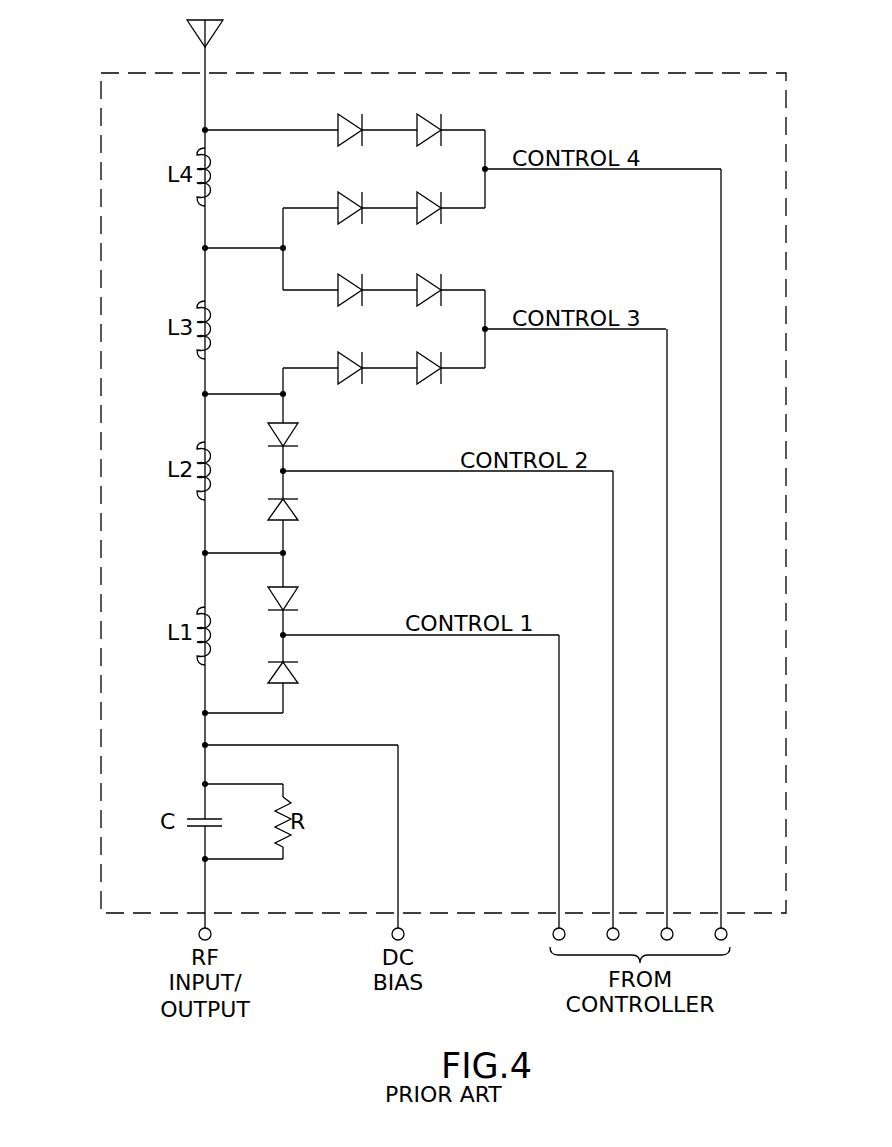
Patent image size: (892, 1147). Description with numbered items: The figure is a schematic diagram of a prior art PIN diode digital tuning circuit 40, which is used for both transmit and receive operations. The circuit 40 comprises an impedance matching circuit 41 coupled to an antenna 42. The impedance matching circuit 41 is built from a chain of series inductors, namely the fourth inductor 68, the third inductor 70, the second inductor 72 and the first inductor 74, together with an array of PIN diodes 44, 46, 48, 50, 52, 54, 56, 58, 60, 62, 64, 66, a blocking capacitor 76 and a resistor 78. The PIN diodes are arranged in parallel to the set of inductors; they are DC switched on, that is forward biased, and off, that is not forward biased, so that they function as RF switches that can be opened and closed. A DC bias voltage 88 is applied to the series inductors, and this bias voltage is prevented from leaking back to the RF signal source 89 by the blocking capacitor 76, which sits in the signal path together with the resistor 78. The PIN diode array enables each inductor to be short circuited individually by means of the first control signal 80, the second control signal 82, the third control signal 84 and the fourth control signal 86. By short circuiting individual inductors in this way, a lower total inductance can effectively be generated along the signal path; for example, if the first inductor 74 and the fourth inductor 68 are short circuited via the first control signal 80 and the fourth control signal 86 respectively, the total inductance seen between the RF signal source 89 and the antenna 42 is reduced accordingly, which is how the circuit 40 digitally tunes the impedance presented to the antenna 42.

The PIN diode digital tuning circuit 40 is at (99, 960).
The impedance matching circuit 41 is at (786, 803).
The antenna 42 is at (218, 33).
The PIN diode 44 is at (351, 115).
The PIN diode 46 is at (430, 115).
The PIN diode 48 is at (351, 193).
The PIN diode 50 is at (430, 193).
The PIN diode 52 is at (351, 275).
The PIN diode 54 is at (430, 275).
The diode 56 is at (351, 353).
The diode 58 is at (430, 353).
The PIN diode 60 is at (298, 432).
The PIN diode 62 is at (298, 510).
The PIN diode 64 is at (298, 596).
The PIN diode 66 is at (298, 673).
The inductor L4 68 is at (194, 184).
The inductor L3 70 is at (194, 337).
The inductor L2 72 is at (194, 478).
The inductor L1 74 is at (194, 643).
The capacitor C 76 is at (198, 828).
The resistor R 78 is at (287, 838).
The control signal CONTROL 1 80 is at (559, 817).
The control signal CONTROL 2 82 is at (613, 817).
The control signal CONTROL 3 84 is at (667, 817).
The control signal CONTROL 4 86 is at (721, 817).
The DC bias voltage 88 is at (399, 804).
The RF signal source 89 is at (205, 920).